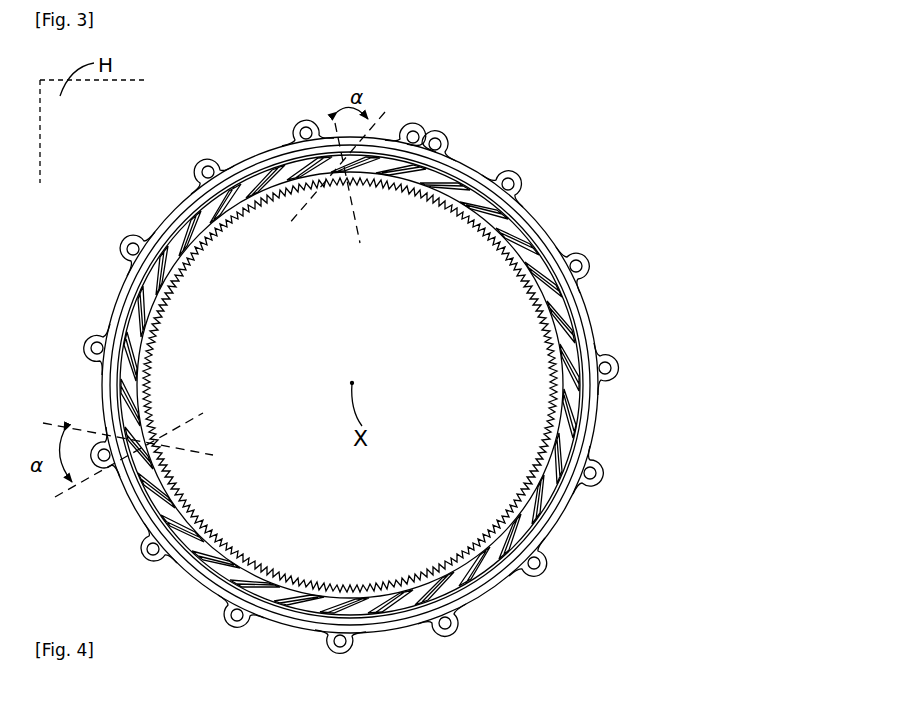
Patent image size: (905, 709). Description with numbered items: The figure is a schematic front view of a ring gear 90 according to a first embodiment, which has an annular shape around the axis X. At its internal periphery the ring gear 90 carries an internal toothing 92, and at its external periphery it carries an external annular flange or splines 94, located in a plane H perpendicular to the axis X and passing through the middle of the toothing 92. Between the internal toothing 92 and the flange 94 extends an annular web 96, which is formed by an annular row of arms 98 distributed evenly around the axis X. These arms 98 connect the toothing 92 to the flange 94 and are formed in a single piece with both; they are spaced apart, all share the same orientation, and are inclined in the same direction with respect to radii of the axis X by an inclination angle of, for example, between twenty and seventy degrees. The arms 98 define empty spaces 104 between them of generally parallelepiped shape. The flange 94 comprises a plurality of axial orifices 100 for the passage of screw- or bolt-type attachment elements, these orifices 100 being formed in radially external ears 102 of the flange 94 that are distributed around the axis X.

The ring gear 90 is at (666, 114).
The internal toothing 92 is at (213, 524).
The external annular flange 94 is at (459, 635).
The annular web 96 is at (421, 595).
The arms 98 is at (122, 327).
The axial orifices 100 is at (437, 136).
The radially external ears 102 is at (447, 146).
The spaces 104 is at (553, 297).